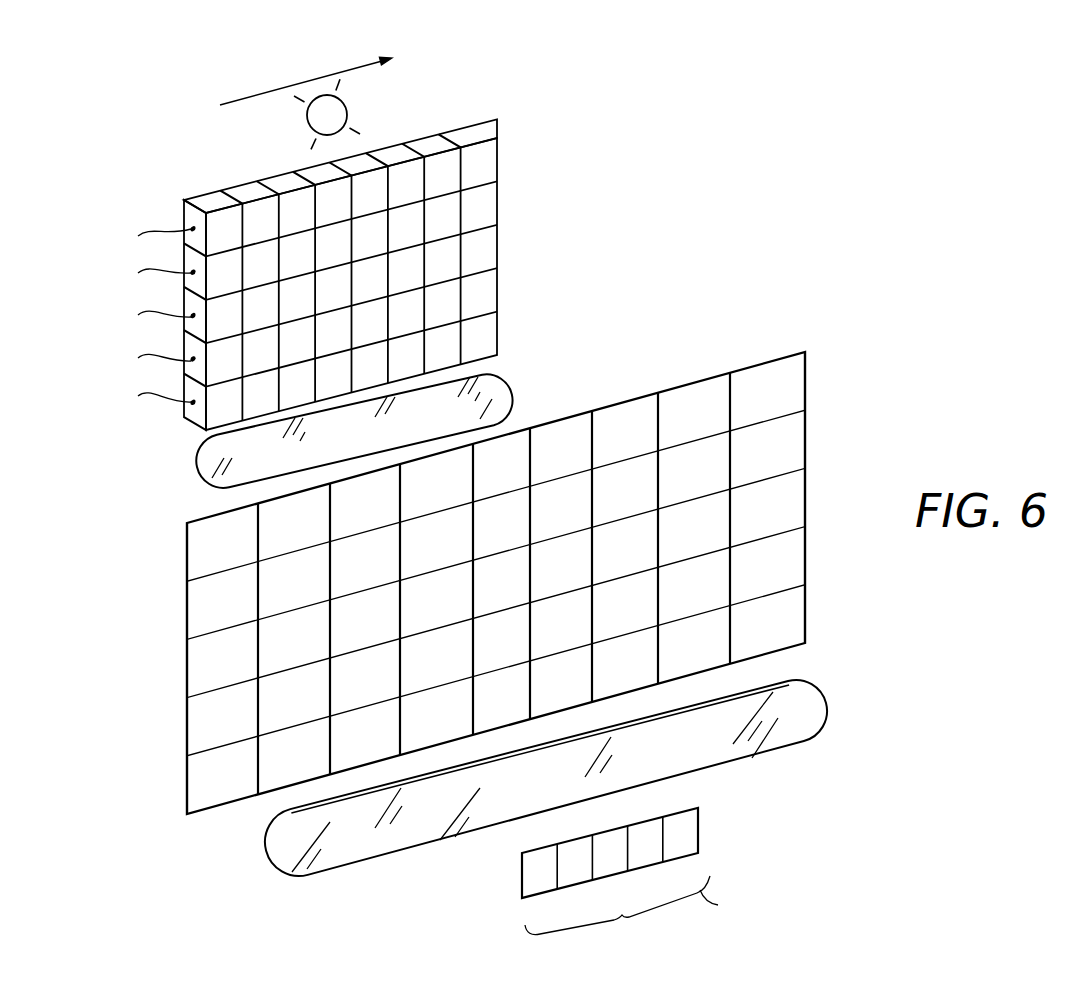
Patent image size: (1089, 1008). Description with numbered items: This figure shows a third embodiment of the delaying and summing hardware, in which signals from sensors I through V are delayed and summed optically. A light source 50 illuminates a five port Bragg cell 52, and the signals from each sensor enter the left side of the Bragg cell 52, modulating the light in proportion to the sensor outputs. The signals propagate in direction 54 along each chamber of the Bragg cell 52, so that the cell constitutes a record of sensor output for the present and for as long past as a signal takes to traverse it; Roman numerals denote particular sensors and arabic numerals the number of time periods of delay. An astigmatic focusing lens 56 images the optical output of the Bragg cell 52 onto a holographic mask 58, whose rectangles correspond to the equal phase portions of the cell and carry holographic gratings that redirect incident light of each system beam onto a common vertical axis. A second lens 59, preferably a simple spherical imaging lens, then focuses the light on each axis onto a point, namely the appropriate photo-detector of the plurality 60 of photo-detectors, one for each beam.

The light source 50 is at (350, 112).
The five port Bragg cell 52 is at (497, 130).
The direction 54 is at (317, 77).
The astigmatic focusing lens 56 is at (512, 388).
The holographic mask 58 is at (805, 503).
The astigmatic focusing lens 59 is at (822, 691).
The plurality of photo-detectors 60 is at (699, 831).